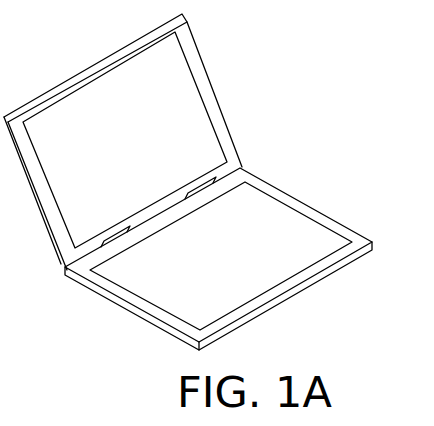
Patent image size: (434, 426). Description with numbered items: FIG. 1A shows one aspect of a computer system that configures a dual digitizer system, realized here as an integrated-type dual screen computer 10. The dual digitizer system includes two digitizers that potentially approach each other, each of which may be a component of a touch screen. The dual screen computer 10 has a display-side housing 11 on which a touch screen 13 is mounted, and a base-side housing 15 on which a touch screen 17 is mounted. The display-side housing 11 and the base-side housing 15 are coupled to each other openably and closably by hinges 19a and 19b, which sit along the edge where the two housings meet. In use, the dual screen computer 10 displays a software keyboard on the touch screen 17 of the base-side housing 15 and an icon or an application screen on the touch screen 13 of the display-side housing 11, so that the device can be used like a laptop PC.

The dual screen computer 10 is at (260, 96).
The display-side housing 11 is at (212, 73).
The touch screen 13 is at (100, 97).
The base-side housing 15 is at (275, 183).
The touch screen 17 is at (303, 237).
The hinge 19a is at (116, 228).
The hinge 19b is at (195, 181).